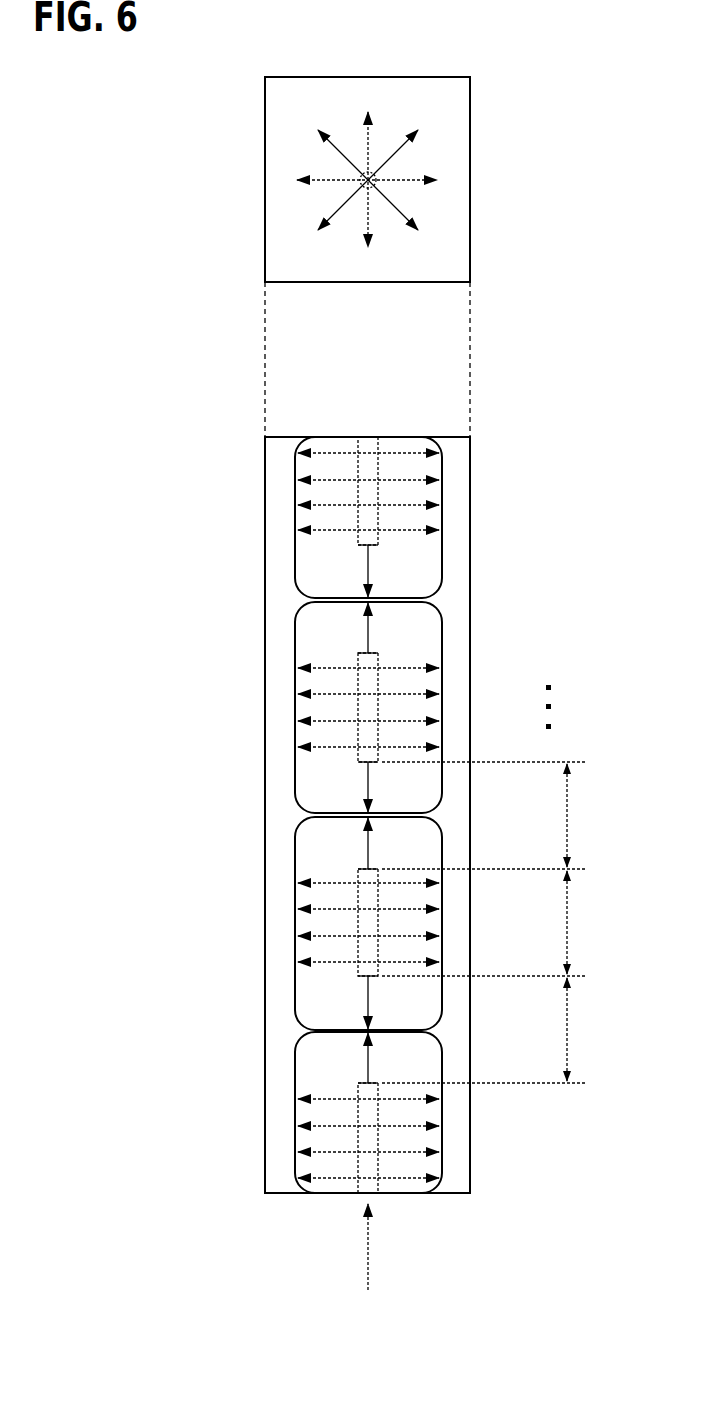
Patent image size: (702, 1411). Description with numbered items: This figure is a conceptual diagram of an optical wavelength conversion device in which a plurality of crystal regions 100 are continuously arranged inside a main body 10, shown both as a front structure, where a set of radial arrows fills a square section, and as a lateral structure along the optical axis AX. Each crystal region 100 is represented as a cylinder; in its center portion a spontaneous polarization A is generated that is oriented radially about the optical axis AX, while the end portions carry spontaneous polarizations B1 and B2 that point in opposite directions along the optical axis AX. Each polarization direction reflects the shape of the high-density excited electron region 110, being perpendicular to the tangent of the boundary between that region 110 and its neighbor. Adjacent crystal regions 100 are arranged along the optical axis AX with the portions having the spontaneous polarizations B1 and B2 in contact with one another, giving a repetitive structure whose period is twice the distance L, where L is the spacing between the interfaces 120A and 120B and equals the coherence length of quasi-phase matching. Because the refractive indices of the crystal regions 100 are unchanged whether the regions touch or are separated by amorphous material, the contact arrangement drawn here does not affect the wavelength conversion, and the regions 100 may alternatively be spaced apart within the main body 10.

The main body 10 is at (470, 118).
The crystal region 100 is at (296, 1065).
The high-density excited electron region 110 is at (365, 518).
The interface 120A is at (358, 545).
The interface 120B is at (358, 653).
The spontaneous polarization A is at (395, 157).
The spontaneous polarization B1 is at (370, 568).
The spontaneous polarization B2 is at (370, 626).
The distance L is at (485, 922).
The optical axis AX is at (368, 1264).